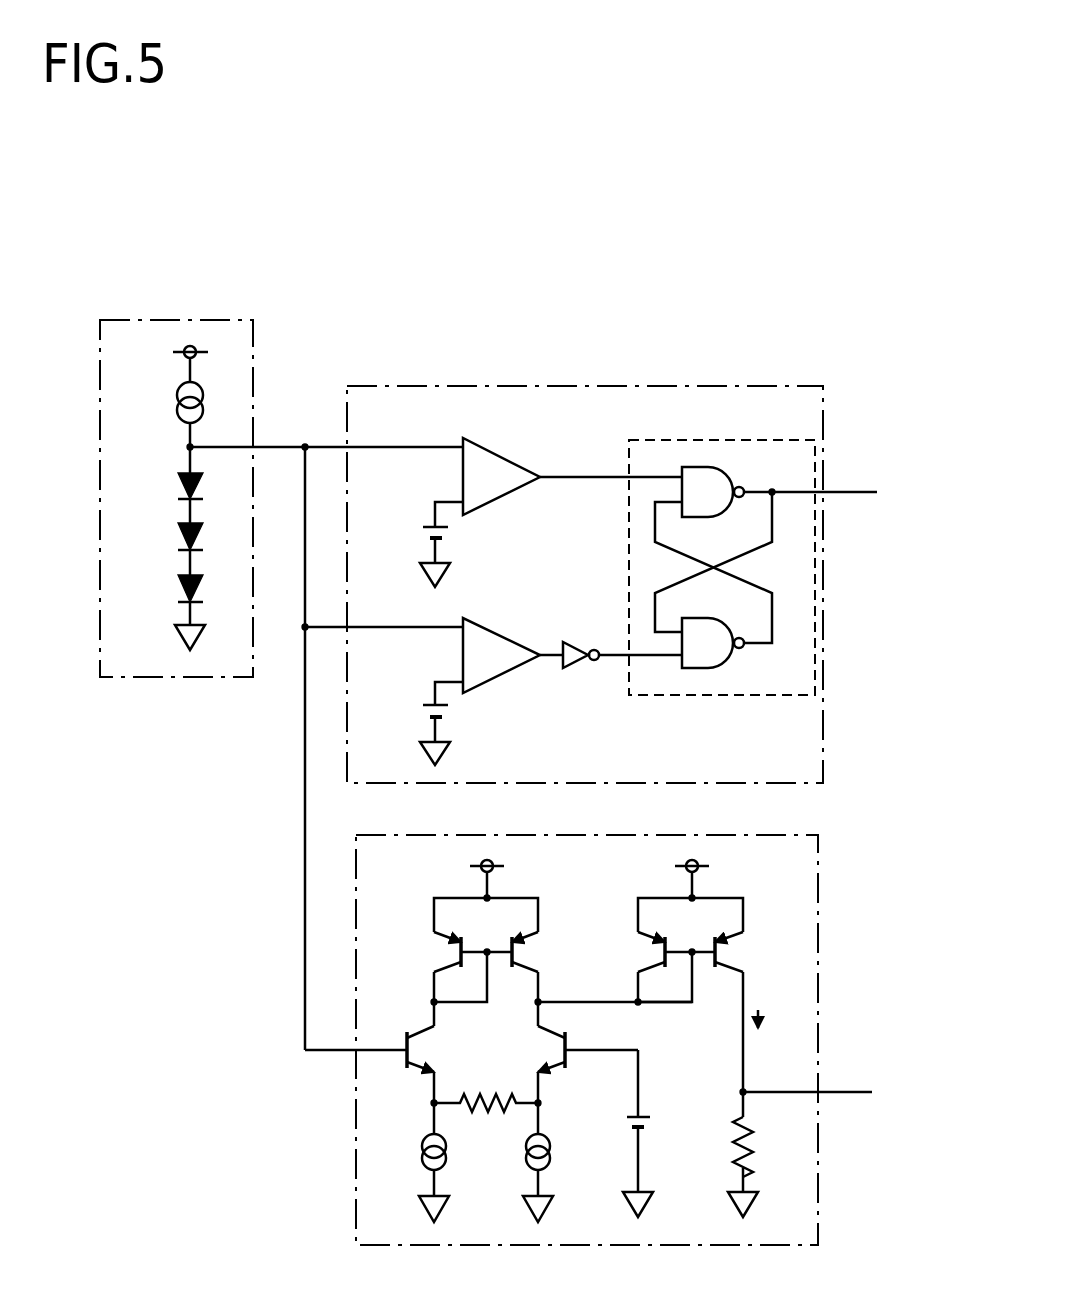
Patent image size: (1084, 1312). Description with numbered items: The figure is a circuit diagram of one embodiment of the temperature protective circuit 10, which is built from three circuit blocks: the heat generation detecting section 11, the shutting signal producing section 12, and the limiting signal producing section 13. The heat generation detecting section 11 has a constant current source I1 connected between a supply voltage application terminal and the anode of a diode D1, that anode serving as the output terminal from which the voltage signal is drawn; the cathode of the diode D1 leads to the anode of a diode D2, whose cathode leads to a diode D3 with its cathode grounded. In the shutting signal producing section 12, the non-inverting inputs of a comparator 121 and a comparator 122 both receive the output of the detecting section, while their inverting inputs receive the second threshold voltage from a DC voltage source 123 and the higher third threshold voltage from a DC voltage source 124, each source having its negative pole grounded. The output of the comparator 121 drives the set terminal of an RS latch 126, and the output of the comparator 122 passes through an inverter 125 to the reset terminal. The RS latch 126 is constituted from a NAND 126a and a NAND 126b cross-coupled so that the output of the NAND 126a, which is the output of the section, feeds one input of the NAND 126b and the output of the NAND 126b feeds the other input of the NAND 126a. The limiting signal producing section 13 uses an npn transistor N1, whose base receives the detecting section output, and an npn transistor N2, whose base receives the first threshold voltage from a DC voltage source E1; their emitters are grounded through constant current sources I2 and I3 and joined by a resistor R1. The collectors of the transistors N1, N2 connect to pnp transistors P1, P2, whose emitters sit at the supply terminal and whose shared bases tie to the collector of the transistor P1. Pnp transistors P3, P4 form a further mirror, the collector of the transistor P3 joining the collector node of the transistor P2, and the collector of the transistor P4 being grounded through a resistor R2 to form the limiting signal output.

The temperature protective circuit 10 is at (547, 252).
The heat generation detecting section 11 is at (189, 320).
The shutting signal producing section 12 is at (597, 386).
The limiting signal producing section 13 is at (570, 835).
The comparator 121 is at (503, 456).
The comparator 122 is at (503, 631).
The DC voltage source 123 is at (421, 533).
The DC voltage source 124 is at (421, 712).
The inverter 125 is at (580, 642).
The RS latch 126 is at (715, 440).
The NAND 126a is at (732, 478).
The NAND 126b is at (728, 668).
The constant current source I1 is at (177, 403).
The constant current source I2 is at (426, 1153).
The constant current source I3 is at (552, 1153).
The diode D1 is at (177, 490).
The diode D2 is at (177, 541).
The diode D3 is at (177, 592).
The pnp-type bipolar transistor P1 is at (436, 952).
The pnp-type bipolar transistor P2 is at (540, 952).
The pnp-type bipolar transistor P3 is at (640, 952).
The pnp-type bipolar transistor P4 is at (744, 952).
The npn-type bipolar transistor N1 is at (400, 1040).
The npn-type bipolar transistor N2 is at (580, 1040).
The resistor R1 is at (487, 1093).
The resistor R2 is at (758, 1145).
The DC voltage source E1 is at (652, 1128).